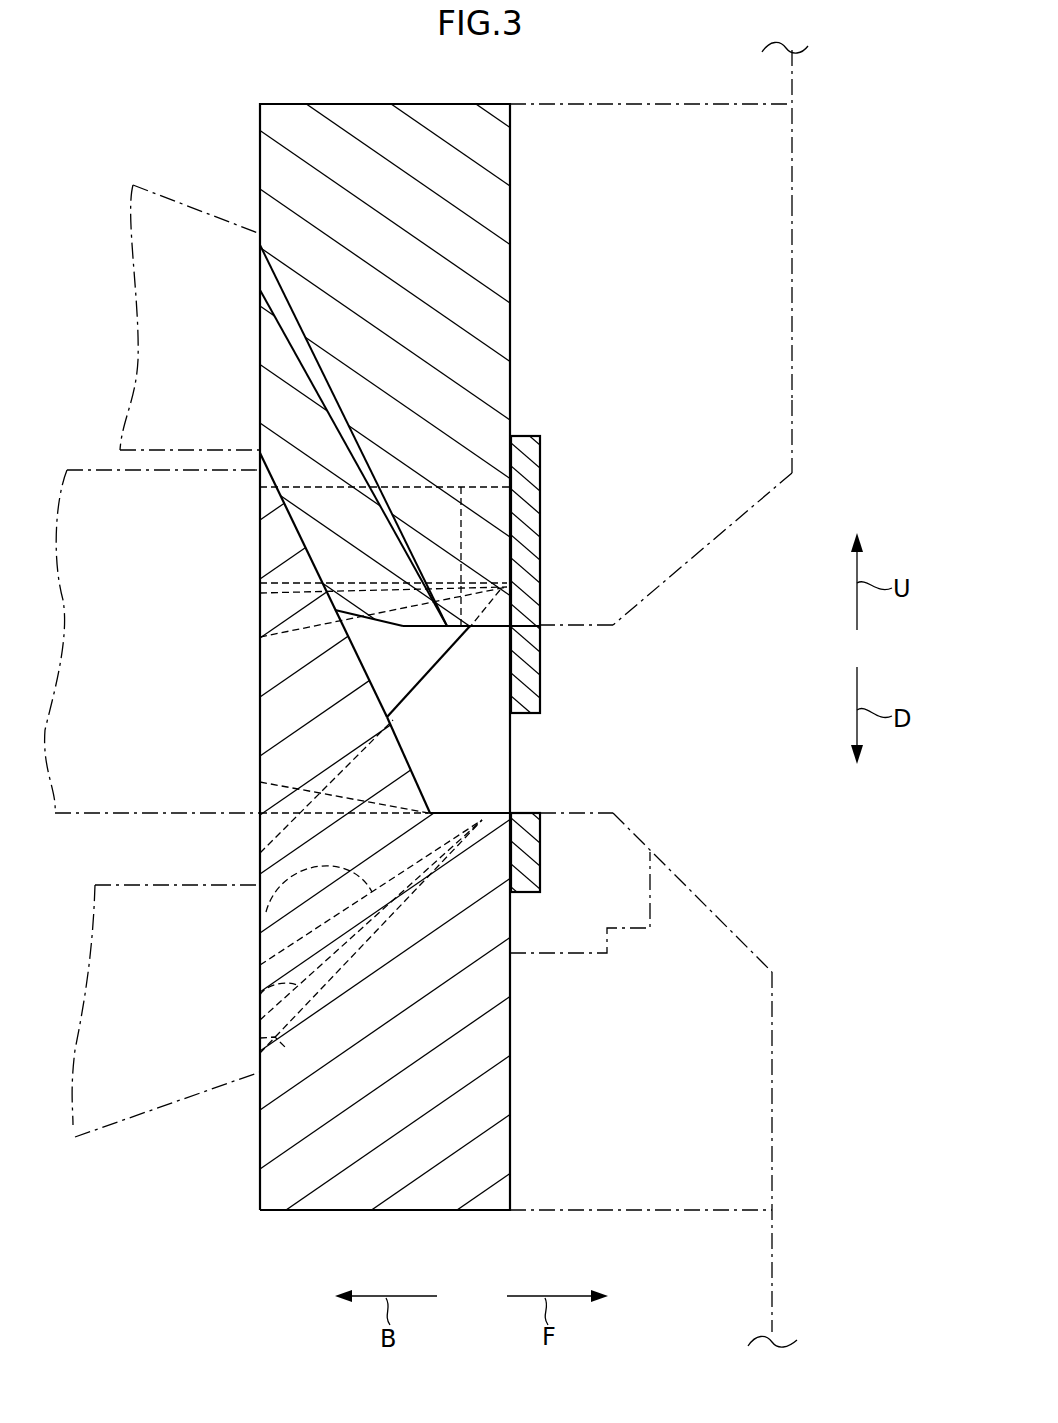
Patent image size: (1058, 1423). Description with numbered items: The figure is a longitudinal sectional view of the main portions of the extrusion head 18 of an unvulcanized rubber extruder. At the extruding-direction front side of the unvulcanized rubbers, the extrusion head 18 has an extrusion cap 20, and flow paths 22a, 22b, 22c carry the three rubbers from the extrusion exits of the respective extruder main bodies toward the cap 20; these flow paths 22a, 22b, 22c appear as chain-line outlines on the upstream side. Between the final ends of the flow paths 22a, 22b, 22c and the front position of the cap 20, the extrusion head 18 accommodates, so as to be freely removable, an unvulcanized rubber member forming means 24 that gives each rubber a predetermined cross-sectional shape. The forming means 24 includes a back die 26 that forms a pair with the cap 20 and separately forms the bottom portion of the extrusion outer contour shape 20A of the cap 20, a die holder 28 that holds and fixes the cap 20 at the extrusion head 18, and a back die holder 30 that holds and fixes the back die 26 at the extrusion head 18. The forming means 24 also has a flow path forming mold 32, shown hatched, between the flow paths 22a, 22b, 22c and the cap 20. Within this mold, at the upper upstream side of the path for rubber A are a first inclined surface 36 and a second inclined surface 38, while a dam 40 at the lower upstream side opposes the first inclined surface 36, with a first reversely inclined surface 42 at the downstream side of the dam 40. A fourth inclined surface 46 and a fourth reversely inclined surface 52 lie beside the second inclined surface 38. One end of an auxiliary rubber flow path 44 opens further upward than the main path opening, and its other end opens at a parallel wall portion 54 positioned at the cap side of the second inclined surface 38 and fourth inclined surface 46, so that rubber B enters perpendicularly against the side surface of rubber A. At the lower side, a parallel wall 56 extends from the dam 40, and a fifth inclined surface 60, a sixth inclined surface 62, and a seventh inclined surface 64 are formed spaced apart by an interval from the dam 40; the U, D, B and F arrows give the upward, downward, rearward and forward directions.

The extrusion head 18 is at (818, 147).
The extrusion cap 20 is at (541, 699).
The extrusion outer contour shape 20A is at (520, 813).
The flow path 22a is at (147, 192).
The flow path 22b is at (98, 471).
The flow path 22c is at (92, 1128).
The unvulcanized rubber member forming means 24 is at (793, 425).
The back die 26 is at (617, 857).
The die holder 28 is at (757, 330).
The back die holder 30 is at (722, 968).
The flow path forming mold 32 is at (298, 1214).
The first inclined surface 36 is at (279, 283).
The second inclined surface 38 is at (287, 340).
The dam 40 is at (258, 738).
The first reversely inclined surface 42 is at (404, 750).
The auxiliary rubber flow path 44 is at (258, 504).
The fourth inclined surface 46 is at (373, 618).
The fourth reversely inclined surface 52 is at (421, 683).
The parallel wall portion 54 is at (483, 628).
The parallel wall 56 is at (463, 812).
The fifth inclined surface 60 is at (258, 911).
The sixth inclined surface 62 is at (258, 995).
The seventh inclined surface 64 is at (258, 1040).